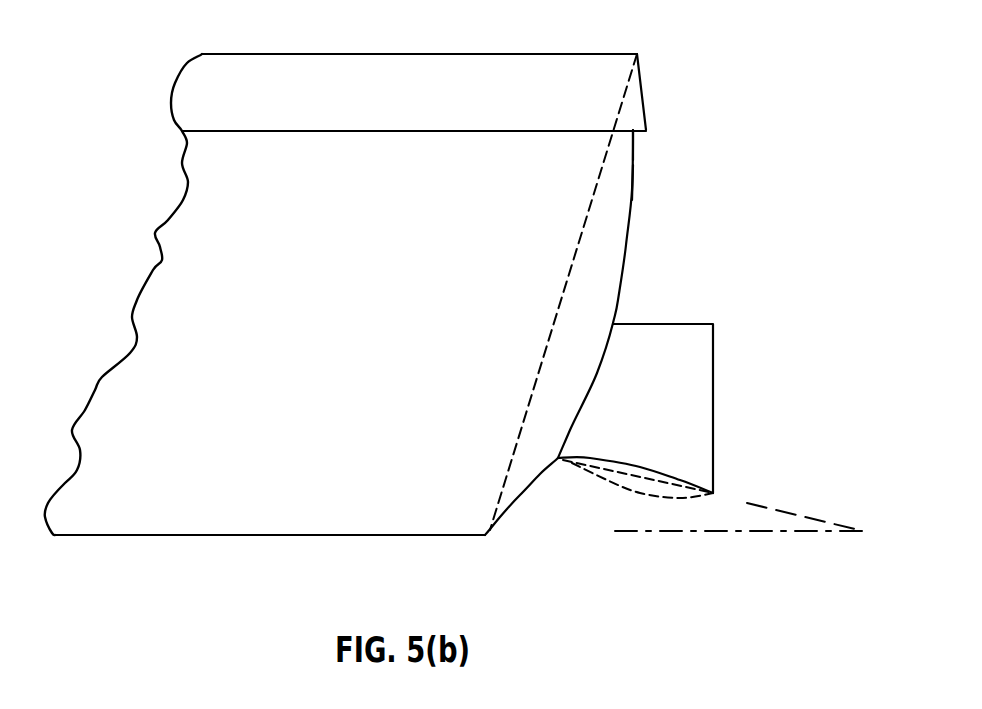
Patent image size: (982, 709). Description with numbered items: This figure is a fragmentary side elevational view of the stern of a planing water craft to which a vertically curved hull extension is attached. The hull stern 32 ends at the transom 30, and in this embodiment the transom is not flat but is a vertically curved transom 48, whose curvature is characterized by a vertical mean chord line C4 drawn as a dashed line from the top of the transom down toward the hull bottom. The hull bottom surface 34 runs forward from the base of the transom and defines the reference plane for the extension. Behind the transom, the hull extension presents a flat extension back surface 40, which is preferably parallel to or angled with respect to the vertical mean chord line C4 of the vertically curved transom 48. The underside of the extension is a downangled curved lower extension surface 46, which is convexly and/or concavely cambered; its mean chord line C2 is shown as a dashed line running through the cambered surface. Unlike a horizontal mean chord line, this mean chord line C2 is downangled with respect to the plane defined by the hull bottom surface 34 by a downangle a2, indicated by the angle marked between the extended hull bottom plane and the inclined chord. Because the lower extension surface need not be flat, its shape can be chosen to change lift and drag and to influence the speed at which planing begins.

The hull transom 30 is at (603, 268).
The hull stern 32 is at (640, 154).
The hull bottom surface 34 is at (340, 530).
The flat extension back surface 40 is at (718, 360).
The downangled curved lower extension surface 46 is at (600, 455).
The curved transom 48 is at (640, 197).
The vertical mean chord line C4 is at (574, 262).
The mean chord line C2 is at (637, 473).
The downangle a2 is at (767, 505).